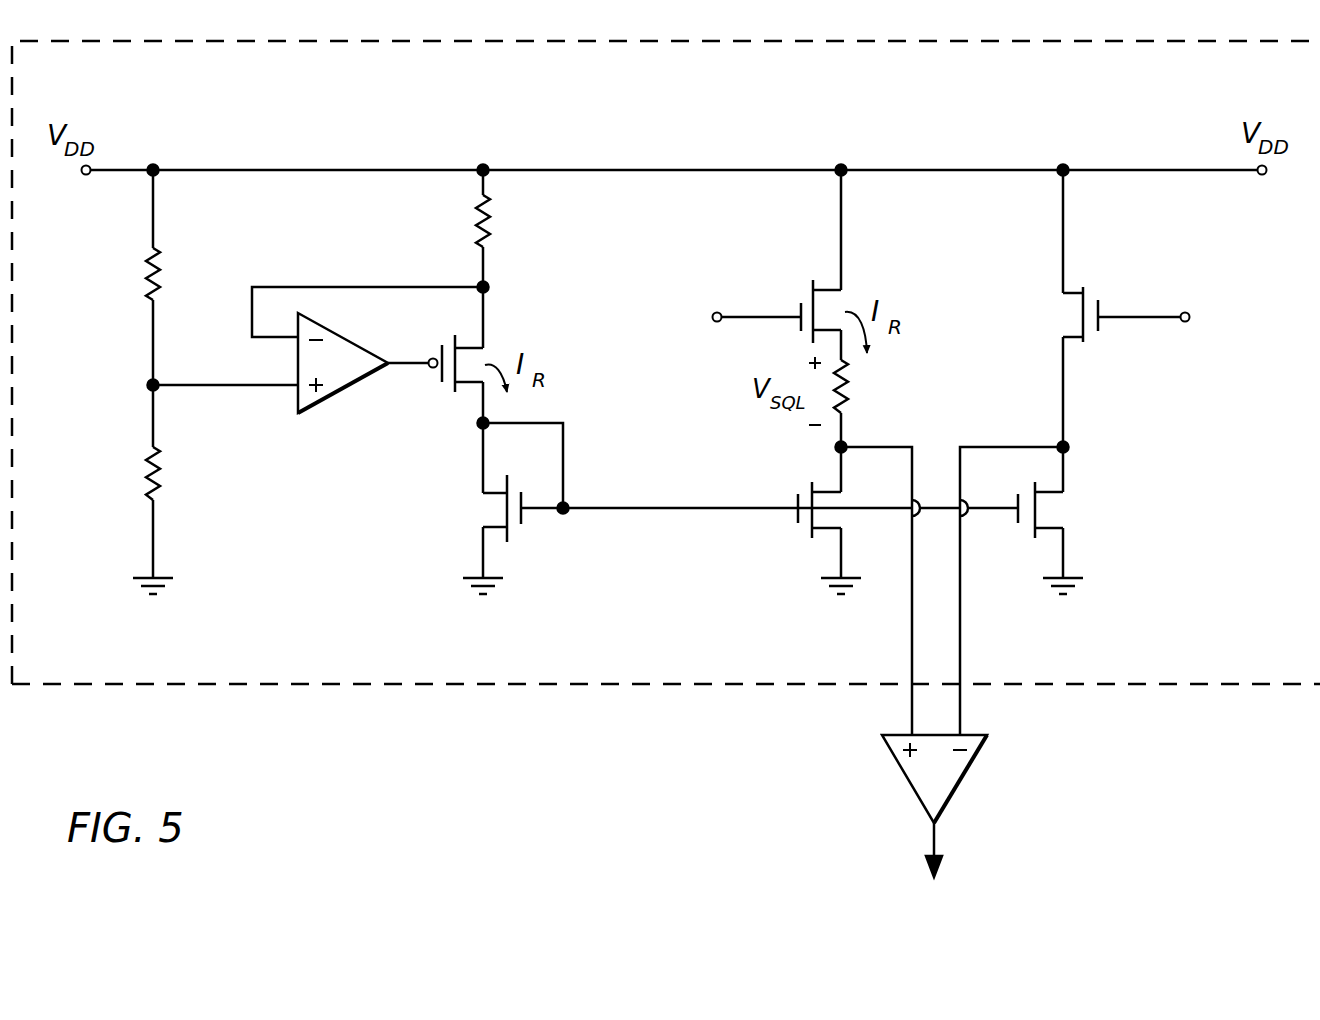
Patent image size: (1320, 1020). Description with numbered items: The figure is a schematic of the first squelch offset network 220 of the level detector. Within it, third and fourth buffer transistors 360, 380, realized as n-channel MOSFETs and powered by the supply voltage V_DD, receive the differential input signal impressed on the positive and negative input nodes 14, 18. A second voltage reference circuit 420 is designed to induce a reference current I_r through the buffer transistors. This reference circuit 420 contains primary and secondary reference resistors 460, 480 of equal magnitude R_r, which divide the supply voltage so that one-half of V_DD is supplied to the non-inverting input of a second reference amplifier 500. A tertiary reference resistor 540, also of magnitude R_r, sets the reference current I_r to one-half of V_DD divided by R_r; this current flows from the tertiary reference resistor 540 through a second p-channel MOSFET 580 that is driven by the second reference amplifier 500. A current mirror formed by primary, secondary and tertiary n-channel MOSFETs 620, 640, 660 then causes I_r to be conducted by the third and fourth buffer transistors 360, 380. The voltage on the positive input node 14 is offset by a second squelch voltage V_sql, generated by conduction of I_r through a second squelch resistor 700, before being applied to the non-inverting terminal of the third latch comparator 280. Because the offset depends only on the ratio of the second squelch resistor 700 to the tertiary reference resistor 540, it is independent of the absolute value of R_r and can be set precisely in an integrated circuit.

The first squelch offset network 220 is at (522, 690).
The second voltage reference circuit 420 is at (163, 382).
The primary reference resistor 460 is at (160, 270).
The secondary reference resistor 480 is at (160, 463).
The second reference amplifier 500 is at (355, 398).
The tertiary reference resistor 540 is at (486, 221).
The second p-channel MOSFET 580 is at (494, 346).
The primary n-channel MOSFET 620 is at (475, 512).
The third buffer transistor 360 is at (800, 283).
The positive input node 14 is at (738, 316).
The second squelch resistor 700 is at (848, 380).
The secondary n-channel MOSFET 640 is at (796, 538).
The tertiary n-channel MOSFET 660 is at (1078, 512).
The fourth buffer transistor 380 is at (1092, 276).
The negative input node 18 is at (1154, 300).
The third latch comparator 280 is at (945, 765).